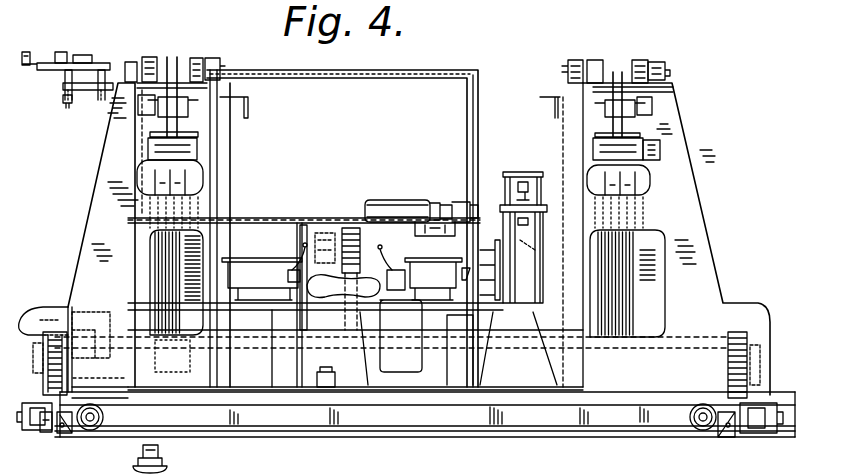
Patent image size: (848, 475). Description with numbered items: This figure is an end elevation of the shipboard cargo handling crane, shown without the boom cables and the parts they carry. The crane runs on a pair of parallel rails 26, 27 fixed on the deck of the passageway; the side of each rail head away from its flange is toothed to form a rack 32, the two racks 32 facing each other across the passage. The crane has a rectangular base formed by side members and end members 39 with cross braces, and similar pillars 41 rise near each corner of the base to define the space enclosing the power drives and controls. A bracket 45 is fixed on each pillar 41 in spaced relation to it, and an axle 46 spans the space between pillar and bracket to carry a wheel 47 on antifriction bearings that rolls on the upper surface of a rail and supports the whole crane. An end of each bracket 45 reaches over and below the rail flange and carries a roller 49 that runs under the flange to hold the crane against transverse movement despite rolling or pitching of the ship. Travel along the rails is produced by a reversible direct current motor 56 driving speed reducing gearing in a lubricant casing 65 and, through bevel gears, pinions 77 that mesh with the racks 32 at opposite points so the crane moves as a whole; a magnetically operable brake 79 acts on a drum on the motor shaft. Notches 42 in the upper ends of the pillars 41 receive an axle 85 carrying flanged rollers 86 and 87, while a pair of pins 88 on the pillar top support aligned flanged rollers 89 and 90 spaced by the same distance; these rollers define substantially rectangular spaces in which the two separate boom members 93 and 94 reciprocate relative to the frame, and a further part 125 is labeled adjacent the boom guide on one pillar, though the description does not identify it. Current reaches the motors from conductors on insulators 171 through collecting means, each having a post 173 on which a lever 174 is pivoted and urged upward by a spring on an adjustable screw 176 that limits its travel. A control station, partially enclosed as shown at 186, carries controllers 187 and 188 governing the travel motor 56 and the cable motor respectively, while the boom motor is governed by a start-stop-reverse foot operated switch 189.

The rail 26 is at (62, 438).
The rail 27 is at (730, 438).
The rack 32 is at (33, 397).
The end member 39 is at (270, 393).
The pillar 41 is at (95, 192).
The notch 42 is at (205, 183).
The bracket 45 is at (40, 307).
The axle 46 is at (33, 365).
The wheel 47 is at (27, 330).
The roller 49 is at (48, 430).
The electric motor 56 is at (392, 202).
The casing 65 is at (312, 235).
The pinion 77 is at (103, 409).
The magnetically operable brake 79 is at (500, 203).
The axle 85 is at (663, 155).
The flanged roller 86 is at (618, 196).
The flanged roller 87 is at (648, 178).
The pin 88 is at (667, 72).
The roller 89 is at (600, 57).
The roller 90 is at (645, 55).
The boom member 93 is at (163, 80).
The boom member 94 is at (608, 83).
The bearing bracket 125 is at (190, 60).
The insulator 171 is at (168, 464).
The post 173 is at (90, 72).
The lever 174 is at (68, 62).
The screw 176 is at (67, 100).
The enclosure 186 is at (413, 69).
The controller 187 is at (248, 268).
The controller 188 is at (425, 258).
The foot operated switch 189 is at (330, 388).